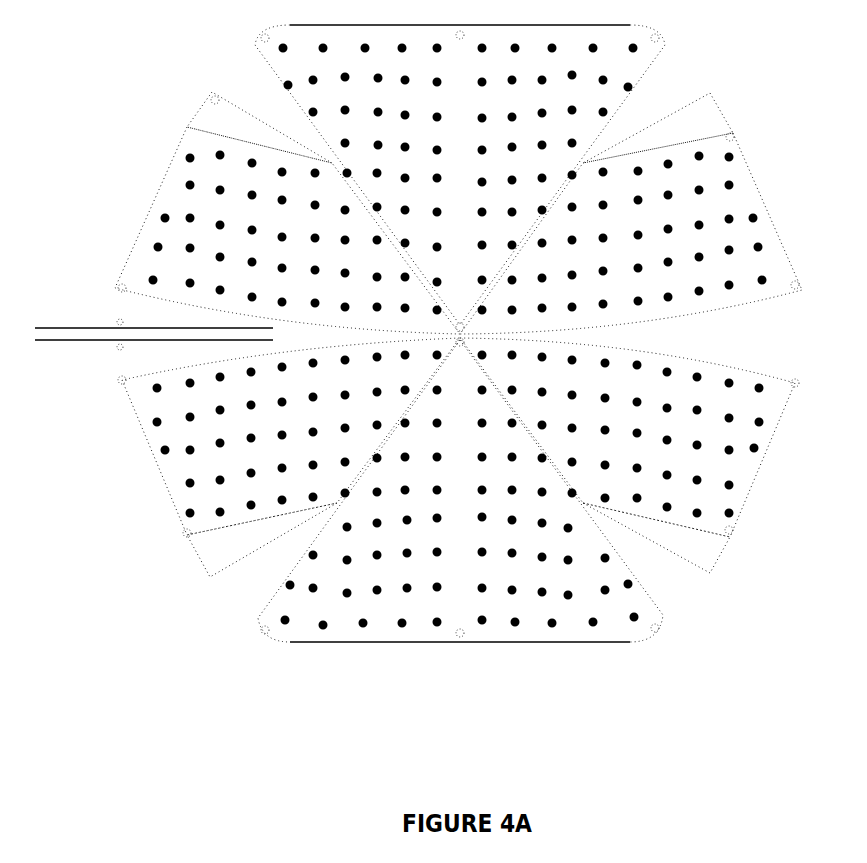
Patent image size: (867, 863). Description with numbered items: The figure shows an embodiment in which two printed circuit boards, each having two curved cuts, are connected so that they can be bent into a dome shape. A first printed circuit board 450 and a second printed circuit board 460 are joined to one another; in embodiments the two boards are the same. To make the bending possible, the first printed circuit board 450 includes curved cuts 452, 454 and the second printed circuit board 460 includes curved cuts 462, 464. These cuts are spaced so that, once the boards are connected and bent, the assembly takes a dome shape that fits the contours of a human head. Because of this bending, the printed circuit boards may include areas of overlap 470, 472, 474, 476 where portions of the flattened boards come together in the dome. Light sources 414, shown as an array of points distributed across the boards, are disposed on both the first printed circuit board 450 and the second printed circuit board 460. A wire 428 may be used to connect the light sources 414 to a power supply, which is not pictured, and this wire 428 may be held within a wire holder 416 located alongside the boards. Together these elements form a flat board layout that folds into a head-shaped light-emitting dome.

The light sources 414 is at (162, 455).
The wire holder 416 is at (117, 322).
The wire 428 is at (62, 328).
The first printed circuit board 450 is at (148, 232).
The curved cut 452 is at (258, 63).
The curved cut 454 is at (658, 70).
The second printed circuit board 460 is at (150, 438).
The curved cut 462 is at (267, 596).
The curved cut 464 is at (662, 610).
The area of overlap 470 is at (223, 117).
The area of overlap 472 is at (708, 110).
The area of overlap 474 is at (683, 550).
The area of overlap 476 is at (233, 543).